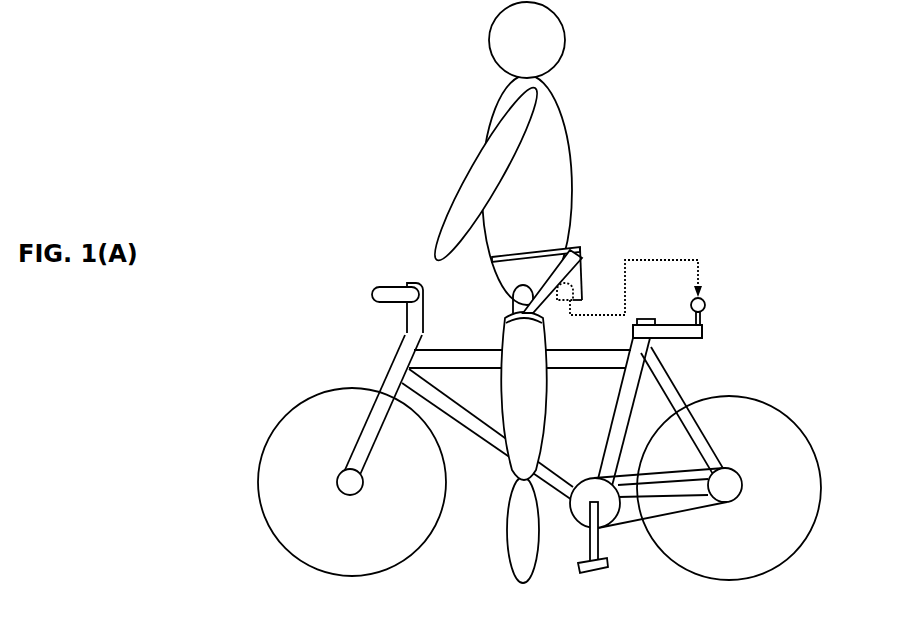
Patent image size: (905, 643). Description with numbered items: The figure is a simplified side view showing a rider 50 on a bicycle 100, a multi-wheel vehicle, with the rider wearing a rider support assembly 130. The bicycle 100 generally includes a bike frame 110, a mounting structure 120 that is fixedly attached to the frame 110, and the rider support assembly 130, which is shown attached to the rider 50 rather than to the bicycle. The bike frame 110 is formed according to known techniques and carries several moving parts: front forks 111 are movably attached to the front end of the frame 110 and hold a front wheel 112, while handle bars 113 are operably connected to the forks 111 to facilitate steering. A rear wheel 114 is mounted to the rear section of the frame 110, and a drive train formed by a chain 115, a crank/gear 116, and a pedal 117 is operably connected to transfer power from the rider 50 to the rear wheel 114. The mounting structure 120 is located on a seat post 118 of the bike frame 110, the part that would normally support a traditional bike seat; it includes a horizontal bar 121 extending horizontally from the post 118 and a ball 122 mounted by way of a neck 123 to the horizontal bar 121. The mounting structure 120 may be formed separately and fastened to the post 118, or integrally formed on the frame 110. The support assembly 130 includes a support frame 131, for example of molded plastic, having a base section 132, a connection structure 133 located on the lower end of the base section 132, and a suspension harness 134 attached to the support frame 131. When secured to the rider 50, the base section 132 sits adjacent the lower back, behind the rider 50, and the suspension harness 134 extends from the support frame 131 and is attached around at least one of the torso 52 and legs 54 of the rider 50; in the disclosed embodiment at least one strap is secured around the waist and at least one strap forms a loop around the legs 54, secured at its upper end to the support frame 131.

The rider 50 is at (452, 59).
The torso 52 is at (585, 166).
The legs 54 is at (556, 394).
The bicycle 100 is at (272, 396).
The bike frame 110 is at (385, 361).
The front forks 111 is at (374, 436).
The front wheel 112 is at (387, 552).
The handle bars 113 is at (395, 291).
The rear wheel 114 is at (742, 420).
The chain 115 is at (677, 513).
The crank/gear 116 is at (606, 513).
The pedal 117 is at (586, 578).
The seat post 118 is at (641, 349).
The mounting structure 120 is at (718, 321).
The horizontal bar 121 is at (685, 330).
The ball 122 is at (702, 301).
The neck 123 is at (708, 317).
The rider support assembly 130 is at (606, 264).
The support frame 131 is at (592, 257).
The base section 132 is at (575, 280).
The connection structure 133 is at (561, 311).
The suspension harness 134 is at (504, 271).